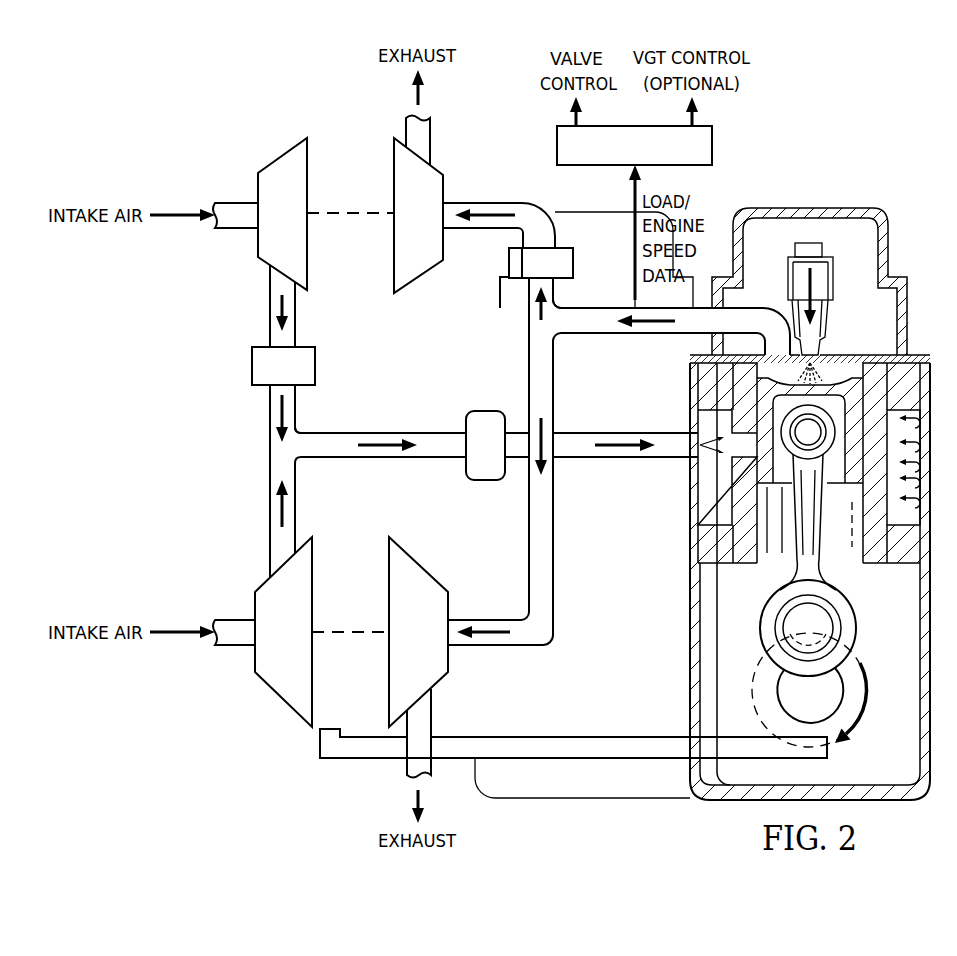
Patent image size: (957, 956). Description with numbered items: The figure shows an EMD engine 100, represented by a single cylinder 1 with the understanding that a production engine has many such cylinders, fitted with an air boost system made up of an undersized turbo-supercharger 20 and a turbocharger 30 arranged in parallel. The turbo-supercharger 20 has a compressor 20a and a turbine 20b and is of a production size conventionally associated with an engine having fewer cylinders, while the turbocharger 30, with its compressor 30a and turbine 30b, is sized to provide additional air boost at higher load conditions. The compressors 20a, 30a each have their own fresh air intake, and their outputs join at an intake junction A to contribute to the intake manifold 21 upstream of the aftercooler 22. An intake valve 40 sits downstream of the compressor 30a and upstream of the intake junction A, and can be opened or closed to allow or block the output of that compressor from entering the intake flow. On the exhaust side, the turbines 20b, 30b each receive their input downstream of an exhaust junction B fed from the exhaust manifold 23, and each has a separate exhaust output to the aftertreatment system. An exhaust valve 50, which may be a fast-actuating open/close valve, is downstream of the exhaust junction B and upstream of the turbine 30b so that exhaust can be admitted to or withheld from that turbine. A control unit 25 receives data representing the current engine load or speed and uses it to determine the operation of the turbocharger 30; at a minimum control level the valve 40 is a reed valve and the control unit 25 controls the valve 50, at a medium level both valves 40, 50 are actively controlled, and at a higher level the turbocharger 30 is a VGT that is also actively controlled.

The cylinder 1 is at (866, 592).
The turbo-supercharger 20 is at (330, 789).
The compressor 20a is at (255, 656).
The turbine 20b is at (389, 669).
The intake manifold 21 is at (588, 452).
The aftercooler 22 is at (483, 418).
The exhaust manifold 23 is at (607, 326).
The control unit 25 is at (712, 144).
The turbocharger 30 is at (311, 124).
The compressor 30a is at (257, 187).
The turbine 30b is at (394, 176).
The intake valve 40 is at (252, 367).
The exhaust valve 50 is at (576, 263).
The engine 100 is at (810, 491).
The intake junction A is at (304, 424).
The exhaust junction B is at (563, 298).